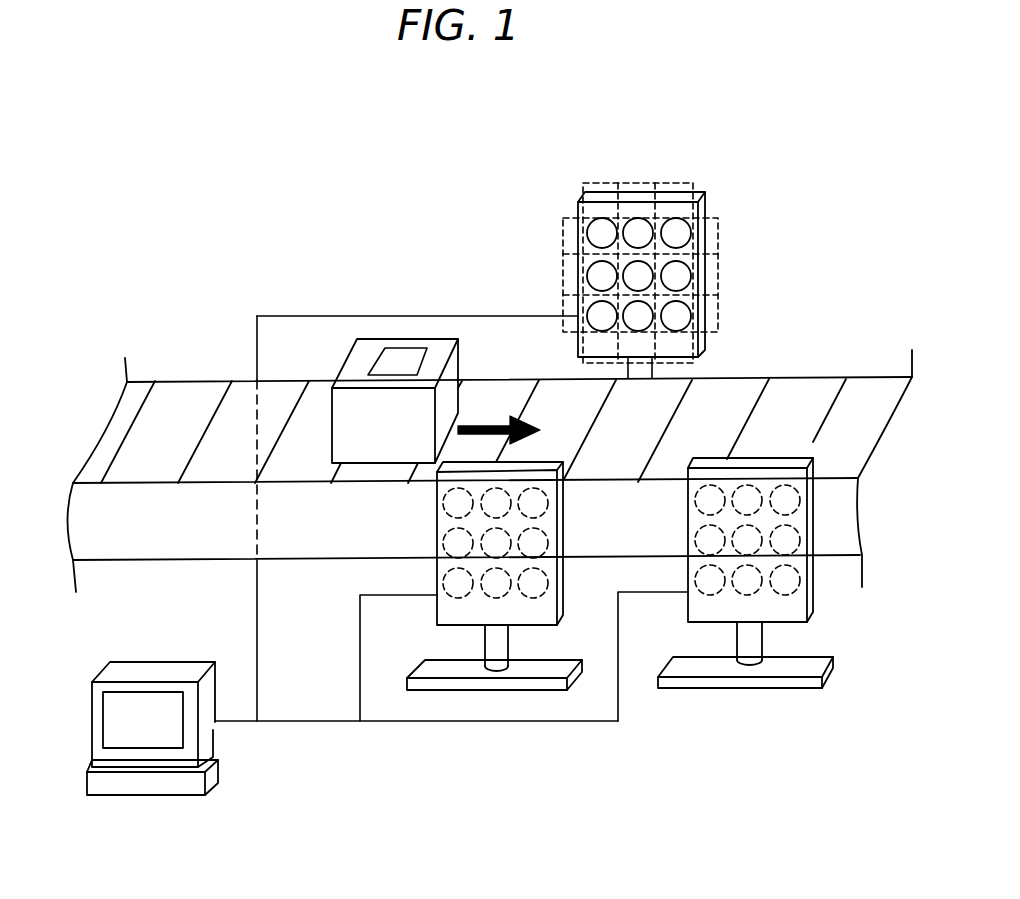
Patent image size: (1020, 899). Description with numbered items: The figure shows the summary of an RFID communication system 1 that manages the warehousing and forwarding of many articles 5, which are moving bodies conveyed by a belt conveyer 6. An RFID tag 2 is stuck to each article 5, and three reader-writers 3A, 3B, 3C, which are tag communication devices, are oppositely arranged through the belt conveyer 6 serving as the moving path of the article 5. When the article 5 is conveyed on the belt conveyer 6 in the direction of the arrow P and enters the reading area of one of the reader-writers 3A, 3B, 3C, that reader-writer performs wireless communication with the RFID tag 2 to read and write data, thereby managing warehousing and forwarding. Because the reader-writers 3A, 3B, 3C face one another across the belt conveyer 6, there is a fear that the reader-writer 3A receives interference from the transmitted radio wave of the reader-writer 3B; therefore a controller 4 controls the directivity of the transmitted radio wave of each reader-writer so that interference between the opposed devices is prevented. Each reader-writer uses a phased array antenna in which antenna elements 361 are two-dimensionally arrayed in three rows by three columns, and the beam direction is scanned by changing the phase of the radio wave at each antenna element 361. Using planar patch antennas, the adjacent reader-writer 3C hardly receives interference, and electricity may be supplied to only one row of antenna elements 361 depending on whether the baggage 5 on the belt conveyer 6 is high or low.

The RFID communication system 1 is at (728, 127).
The RFID tag 2 is at (402, 365).
The reader-writer 3A is at (563, 578).
The reader-writer 3B is at (700, 350).
The reader-writer 3C is at (807, 604).
The antenna element 361 is at (588, 228).
The controller 4 is at (92, 726).
The article 5 is at (348, 352).
The belt conveyer 6 is at (172, 381).